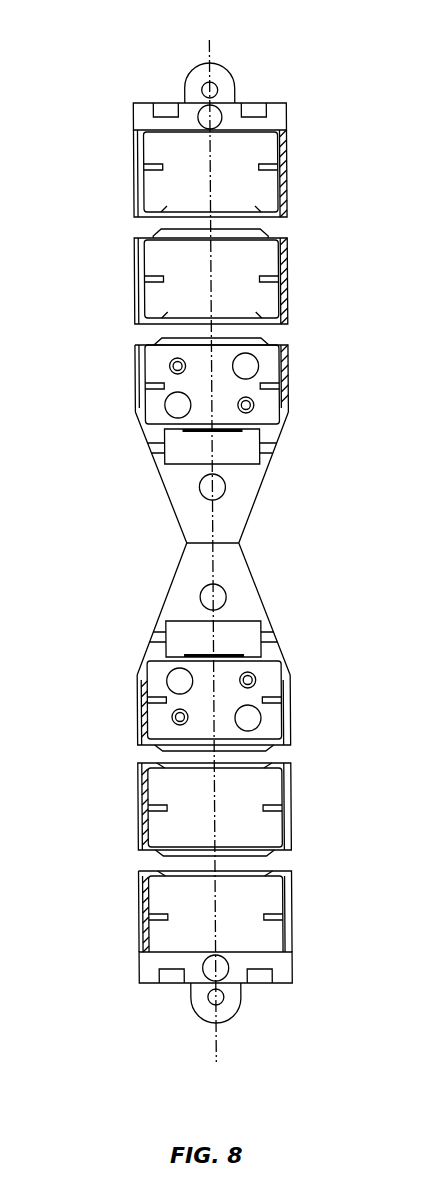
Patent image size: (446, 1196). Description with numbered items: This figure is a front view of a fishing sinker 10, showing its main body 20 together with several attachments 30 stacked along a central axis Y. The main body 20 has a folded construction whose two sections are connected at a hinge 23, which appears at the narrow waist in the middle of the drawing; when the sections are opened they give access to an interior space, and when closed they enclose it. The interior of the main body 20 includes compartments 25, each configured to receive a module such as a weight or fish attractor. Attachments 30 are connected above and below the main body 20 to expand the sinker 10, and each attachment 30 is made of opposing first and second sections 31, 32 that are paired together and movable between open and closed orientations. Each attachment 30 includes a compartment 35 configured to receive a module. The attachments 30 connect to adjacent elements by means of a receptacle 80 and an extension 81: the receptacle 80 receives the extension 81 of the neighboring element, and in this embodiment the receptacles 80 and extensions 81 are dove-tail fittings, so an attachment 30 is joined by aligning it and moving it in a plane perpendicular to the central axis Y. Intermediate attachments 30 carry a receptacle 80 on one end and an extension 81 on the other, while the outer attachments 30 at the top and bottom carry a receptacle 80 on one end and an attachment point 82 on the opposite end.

The sinker 10 is at (108, 1004).
The main body 20 is at (80, 521).
The hinge 23 is at (223, 539).
The compartment 25 is at (259, 403).
The attachment 30 is at (258, 190).
The first section 31 is at (137, 282).
The second section 32 is at (136, 165).
The compartment 35 is at (172, 150).
The receptacle 80 is at (255, 215).
The extension 81 is at (253, 236).
The attachment point 82 is at (216, 84).
The central axis Y is at (213, 157).